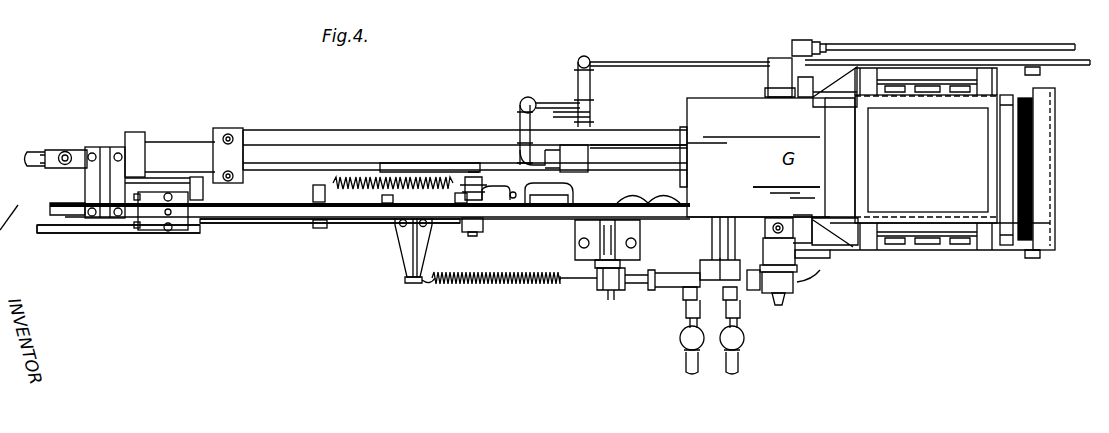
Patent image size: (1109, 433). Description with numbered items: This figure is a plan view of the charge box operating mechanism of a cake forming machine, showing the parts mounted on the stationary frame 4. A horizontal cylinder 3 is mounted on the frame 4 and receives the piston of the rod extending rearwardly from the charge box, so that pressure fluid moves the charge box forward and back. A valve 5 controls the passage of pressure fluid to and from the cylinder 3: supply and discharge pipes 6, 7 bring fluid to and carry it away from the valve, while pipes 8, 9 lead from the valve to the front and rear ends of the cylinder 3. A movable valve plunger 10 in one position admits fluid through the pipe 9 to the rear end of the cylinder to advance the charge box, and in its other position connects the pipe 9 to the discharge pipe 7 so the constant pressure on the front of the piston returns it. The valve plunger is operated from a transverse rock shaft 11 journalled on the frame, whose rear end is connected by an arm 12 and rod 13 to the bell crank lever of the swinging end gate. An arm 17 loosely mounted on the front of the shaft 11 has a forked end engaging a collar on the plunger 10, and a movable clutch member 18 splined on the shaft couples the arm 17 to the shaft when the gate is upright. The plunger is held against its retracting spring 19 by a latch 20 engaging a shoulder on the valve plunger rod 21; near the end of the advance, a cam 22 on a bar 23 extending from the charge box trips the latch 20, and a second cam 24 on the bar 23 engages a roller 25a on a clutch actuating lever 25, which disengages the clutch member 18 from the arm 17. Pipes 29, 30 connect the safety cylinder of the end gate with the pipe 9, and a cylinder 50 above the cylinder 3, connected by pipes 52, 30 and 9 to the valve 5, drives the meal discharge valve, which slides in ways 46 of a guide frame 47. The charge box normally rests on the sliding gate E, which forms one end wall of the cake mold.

The horizontal cylinder 3 is at (372, 145).
The stationary frame 4 is at (284, 130).
The valve 5 is at (718, 270).
The supply pipe 6 is at (738, 358).
The discharge pipe 7 is at (687, 360).
The pipe 8 is at (738, 258).
The pipe 9 is at (645, 210).
The valve plunger 10 is at (668, 285).
The transverse rock shaft 11 is at (790, 62).
The arm 12 is at (808, 45).
The rod 13 is at (918, 47).
The arm 17 is at (775, 290).
The movable clutch member 18 is at (797, 262).
The retracting spring 19 is at (193, 195).
The latch 20 is at (608, 285).
The valve plunger rod 21 is at (572, 285).
The cam 22 is at (110, 228).
The bar 23 is at (380, 212).
The second cam 24 is at (250, 224).
The clutch actuating lever 25 is at (822, 258).
The roller 25a is at (765, 262).
The pipe 29 is at (1070, 70).
The pipe 30 is at (597, 128).
The ways 46 is at (955, 105).
The guide frame 47 is at (1018, 68).
The cylinder 50 is at (655, 150).
The pipe 52 is at (517, 125).
The sliding gate E is at (1050, 170).